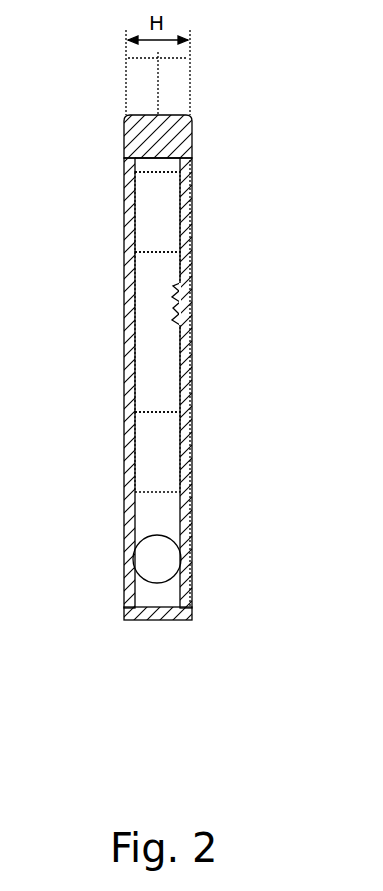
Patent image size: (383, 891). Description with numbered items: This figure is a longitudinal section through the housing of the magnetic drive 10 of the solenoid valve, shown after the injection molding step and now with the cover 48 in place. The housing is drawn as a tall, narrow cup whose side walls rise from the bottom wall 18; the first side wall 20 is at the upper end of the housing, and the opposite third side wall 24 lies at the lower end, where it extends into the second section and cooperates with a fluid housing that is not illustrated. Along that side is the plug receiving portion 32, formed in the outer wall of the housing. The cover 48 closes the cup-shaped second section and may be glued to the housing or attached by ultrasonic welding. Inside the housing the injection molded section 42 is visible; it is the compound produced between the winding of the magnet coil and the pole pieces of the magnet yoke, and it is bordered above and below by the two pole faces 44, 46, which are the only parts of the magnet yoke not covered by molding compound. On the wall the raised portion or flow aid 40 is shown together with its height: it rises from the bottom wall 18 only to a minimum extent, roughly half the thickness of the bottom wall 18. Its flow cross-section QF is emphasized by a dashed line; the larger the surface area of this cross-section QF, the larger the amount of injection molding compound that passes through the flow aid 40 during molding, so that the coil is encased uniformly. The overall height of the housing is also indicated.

The magnetic drive 10 is at (107, 101).
The bottom wall 18 is at (190, 410).
The first side wall 20 is at (190, 128).
The third side wall 24 is at (130, 622).
The plug receiving portion 32 is at (152, 560).
The raised portion or flow aid 40 is at (182, 312).
The injection molded section 42 is at (157, 332).
The pole face 44 is at (157, 212).
The pole face 46 is at (157, 452).
The cover 48 is at (130, 330).
The flow cross-section QF is at (180, 303).